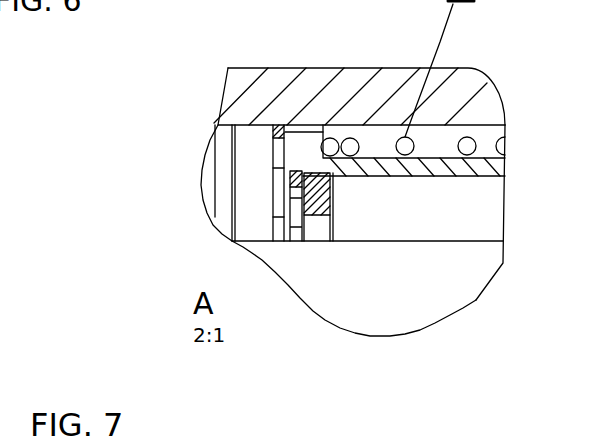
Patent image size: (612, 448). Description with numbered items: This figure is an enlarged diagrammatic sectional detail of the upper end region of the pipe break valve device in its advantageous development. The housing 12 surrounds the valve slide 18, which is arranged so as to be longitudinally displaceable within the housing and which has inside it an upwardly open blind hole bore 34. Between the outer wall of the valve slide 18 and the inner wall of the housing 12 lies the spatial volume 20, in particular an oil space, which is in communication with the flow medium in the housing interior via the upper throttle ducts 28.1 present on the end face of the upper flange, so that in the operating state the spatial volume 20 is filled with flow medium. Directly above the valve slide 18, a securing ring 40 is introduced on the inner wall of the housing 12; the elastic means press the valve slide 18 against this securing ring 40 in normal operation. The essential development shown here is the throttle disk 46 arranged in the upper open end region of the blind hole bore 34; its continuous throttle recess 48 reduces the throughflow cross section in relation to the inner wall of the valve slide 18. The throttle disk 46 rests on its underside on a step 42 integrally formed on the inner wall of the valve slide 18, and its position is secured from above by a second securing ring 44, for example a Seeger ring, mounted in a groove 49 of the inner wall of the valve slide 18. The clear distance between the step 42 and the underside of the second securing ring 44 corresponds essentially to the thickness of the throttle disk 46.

The housing 12 is at (443, 82).
The valve slide 18 is at (382, 158).
The spatial volume 20 is at (434, 142).
The upper throttle ducts 28.1 is at (301, 171).
The blind hole bore 34 is at (477, 214).
The securing ring 40 is at (272, 152).
The step 42 is at (348, 138).
The second securing ring 44 is at (290, 200).
The throttle disk 46 is at (331, 204).
The throttle recess 48 is at (331, 217).
The groove 49 is at (329, 175).